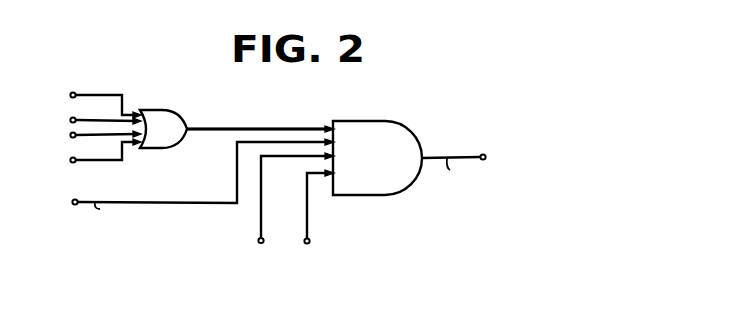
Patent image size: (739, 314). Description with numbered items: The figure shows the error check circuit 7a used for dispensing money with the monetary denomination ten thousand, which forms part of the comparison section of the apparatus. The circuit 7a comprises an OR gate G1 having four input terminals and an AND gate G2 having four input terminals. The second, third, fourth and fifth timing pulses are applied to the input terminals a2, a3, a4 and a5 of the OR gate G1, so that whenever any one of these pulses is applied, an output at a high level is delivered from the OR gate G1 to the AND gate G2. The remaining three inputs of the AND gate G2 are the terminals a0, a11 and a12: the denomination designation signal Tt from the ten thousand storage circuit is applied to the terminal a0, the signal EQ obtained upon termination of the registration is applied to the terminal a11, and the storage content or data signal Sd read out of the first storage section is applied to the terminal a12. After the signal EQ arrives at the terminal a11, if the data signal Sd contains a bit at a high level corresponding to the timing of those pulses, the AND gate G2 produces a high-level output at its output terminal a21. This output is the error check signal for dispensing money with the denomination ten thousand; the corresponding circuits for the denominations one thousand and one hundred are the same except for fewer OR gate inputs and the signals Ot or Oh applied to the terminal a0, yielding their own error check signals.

The input terminal a2 is at (75, 93).
The input terminal a3 is at (75, 118).
The input terminal a4 is at (75, 137).
The input terminal a5 is at (75, 162).
The error check circuit for "10,000" 7a is at (243, 117).
The input terminal a0 is at (73, 204).
The input terminal a11 is at (258, 240).
The input terminal a12 is at (310, 241).
The output terminal a21 is at (481, 155).
The OR gate G1 is at (163, 129).
The AND gate G2 is at (377, 158).